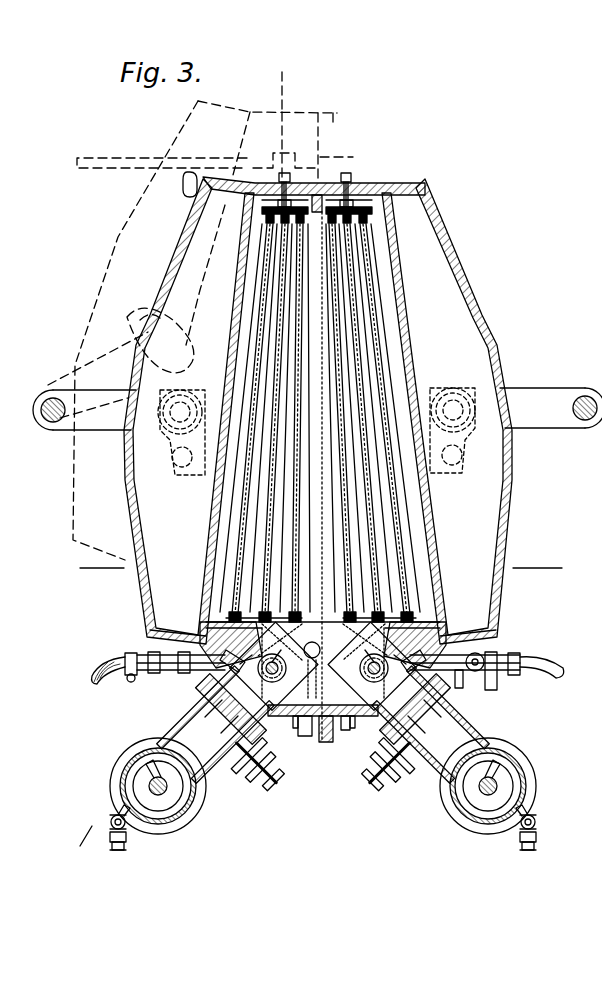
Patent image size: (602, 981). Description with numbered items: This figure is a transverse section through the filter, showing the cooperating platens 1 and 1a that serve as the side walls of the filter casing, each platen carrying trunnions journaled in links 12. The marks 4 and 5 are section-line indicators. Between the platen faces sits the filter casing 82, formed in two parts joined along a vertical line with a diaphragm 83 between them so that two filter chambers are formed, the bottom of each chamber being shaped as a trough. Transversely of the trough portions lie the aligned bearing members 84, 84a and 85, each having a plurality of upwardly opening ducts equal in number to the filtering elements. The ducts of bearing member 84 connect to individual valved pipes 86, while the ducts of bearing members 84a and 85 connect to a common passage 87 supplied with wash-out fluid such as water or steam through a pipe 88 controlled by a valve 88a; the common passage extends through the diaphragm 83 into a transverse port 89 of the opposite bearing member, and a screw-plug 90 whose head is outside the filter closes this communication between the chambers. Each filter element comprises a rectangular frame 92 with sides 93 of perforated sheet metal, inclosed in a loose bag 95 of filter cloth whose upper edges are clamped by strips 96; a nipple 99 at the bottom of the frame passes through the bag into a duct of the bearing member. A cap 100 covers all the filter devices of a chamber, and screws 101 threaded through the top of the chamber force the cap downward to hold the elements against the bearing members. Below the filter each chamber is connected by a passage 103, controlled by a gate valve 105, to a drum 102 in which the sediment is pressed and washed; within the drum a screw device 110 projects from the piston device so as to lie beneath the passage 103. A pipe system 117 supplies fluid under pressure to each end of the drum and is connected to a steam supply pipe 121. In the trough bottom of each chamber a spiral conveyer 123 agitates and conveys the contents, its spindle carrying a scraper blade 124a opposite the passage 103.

The platen 1 is at (183, 250).
The platen 1a is at (492, 268).
The section line 4 is at (305, 78).
The section line 5 is at (309, 579).
The link 12 is at (317, 409).
The filter casing 82 is at (372, 185).
The diaphragm 83 is at (326, 742).
The bearing member 84 is at (214, 626).
The bearing member 84a is at (387, 666).
The bearing member 85 is at (438, 616).
The individual pipes 86 is at (195, 672).
The common passage 87 is at (458, 618).
The pipe 88 is at (548, 662).
The valve 88a is at (480, 656).
The transverse port 89 is at (330, 662).
The screw-plug 90 is at (298, 724).
The rectangular frame 92 is at (233, 618).
The sides 93 is at (262, 346).
The bag 95 is at (252, 314).
The strips 96 is at (264, 220).
The nipple 99 is at (204, 628).
The cap 100 is at (291, 200).
The screws 101 is at (278, 172).
The drum 102 is at (182, 810).
The passage 103 is at (194, 742).
The gate valve 105 is at (244, 772).
The screw device 110 is at (148, 786).
The pipe system 117 is at (112, 818).
The steam supply pipe 121 is at (126, 846).
The spiral conveyer 123 is at (236, 670).
The scraper blade 124a is at (294, 728).